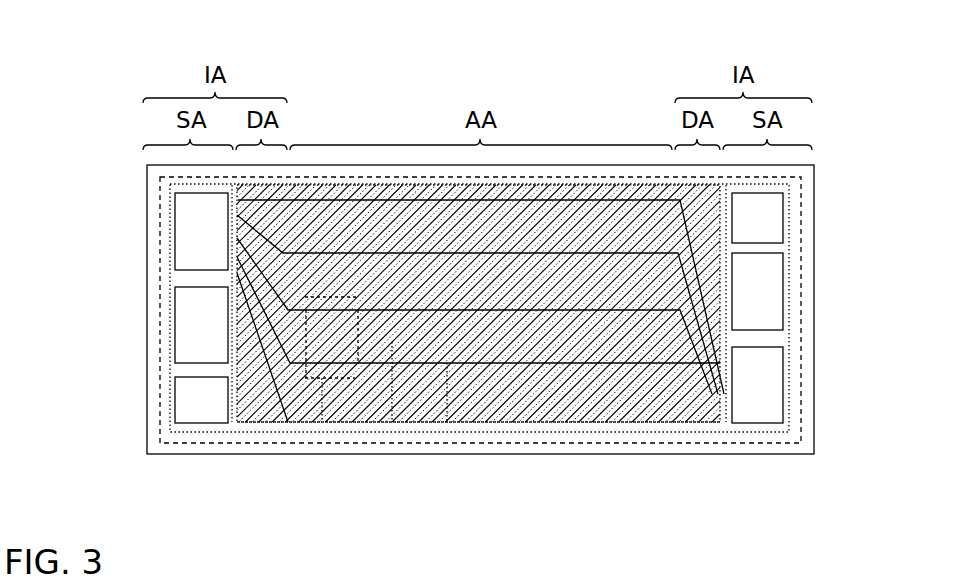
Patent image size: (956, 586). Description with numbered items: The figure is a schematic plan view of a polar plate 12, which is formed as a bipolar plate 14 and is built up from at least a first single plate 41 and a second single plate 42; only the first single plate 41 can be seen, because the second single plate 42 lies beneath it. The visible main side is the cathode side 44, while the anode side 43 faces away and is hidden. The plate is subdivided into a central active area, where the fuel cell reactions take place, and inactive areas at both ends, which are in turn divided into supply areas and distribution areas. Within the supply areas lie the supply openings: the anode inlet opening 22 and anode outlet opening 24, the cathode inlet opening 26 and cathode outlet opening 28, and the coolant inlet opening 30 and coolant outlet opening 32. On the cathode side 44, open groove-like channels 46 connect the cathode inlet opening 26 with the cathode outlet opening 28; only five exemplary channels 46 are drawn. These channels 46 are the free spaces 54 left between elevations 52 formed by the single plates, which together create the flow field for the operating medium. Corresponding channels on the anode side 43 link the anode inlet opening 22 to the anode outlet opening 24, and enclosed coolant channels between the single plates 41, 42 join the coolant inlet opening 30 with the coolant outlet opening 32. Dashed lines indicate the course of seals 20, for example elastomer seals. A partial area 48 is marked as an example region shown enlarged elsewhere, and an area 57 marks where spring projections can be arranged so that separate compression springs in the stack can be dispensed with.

The polar plate 12 is at (618, 51).
The bipolar plate 14 is at (577, 90).
The seals 20 is at (787, 430).
The anode inlet opening 22 is at (175, 403).
The anode outlet opening 24 is at (783, 218).
The cathode inlet opening 26 is at (175, 225).
The cathode outlet opening 28 is at (783, 382).
The coolant inlet opening 30 is at (175, 332).
The coolant outlet opening 32 is at (783, 290).
The first single plate 41 is at (479, 356).
The cathode side 44 is at (568, 436).
The second single plate 42 is at (490, 475).
The anode side 43 is at (697, 426).
The channels 46 is at (478, 392).
The free spaces 54 is at (470, 422).
The partial area 48 is at (322, 380).
The elevations 52 is at (404, 403).
The area 57 is at (641, 406).